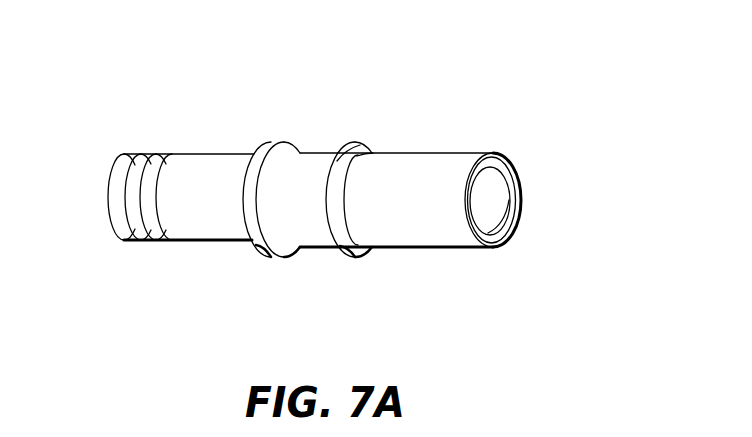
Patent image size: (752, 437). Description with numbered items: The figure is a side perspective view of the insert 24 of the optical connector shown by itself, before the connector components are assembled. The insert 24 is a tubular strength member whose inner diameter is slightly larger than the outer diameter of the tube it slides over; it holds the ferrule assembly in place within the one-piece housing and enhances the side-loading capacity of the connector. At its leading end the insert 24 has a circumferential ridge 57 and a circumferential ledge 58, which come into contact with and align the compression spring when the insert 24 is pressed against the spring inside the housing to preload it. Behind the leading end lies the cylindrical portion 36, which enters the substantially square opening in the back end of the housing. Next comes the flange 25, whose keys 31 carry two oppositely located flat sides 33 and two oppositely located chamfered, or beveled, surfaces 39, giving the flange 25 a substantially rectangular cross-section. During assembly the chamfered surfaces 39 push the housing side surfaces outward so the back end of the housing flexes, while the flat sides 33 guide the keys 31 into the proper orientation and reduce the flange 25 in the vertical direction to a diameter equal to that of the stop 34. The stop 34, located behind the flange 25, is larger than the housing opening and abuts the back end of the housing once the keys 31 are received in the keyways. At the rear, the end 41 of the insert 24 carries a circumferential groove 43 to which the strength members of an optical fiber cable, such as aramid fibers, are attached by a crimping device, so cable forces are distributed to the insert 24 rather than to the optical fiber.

The insert 24 is at (520, 95).
The flange 25 is at (367, 143).
The key 31 is at (335, 230).
The flat side 33 is at (347, 148).
The stop 34 is at (280, 141).
The cylindrical portion 36 is at (424, 218).
The chamfered surface 39 is at (362, 250).
The end 41 is at (122, 158).
The circumferential groove 43 is at (148, 158).
The circumferential ridge 57 is at (520, 183).
The circumferential ledge 58 is at (510, 238).